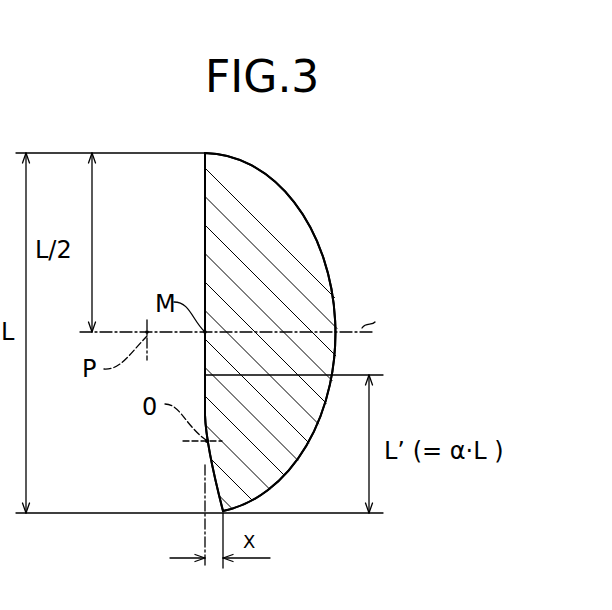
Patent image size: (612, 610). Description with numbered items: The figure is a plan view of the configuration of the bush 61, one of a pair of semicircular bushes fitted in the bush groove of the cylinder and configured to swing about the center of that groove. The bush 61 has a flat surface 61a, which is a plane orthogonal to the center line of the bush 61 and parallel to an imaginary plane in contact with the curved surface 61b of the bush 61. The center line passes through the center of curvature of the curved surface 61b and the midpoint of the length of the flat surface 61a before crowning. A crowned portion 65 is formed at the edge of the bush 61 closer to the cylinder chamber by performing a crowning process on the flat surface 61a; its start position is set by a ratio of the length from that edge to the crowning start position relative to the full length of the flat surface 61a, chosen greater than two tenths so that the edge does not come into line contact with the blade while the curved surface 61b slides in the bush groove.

The bush 61 is at (336, 220).
The flat surface 61a is at (205, 248).
The curved surface 61b is at (332, 277).
The crowned portion 65 is at (213, 472).